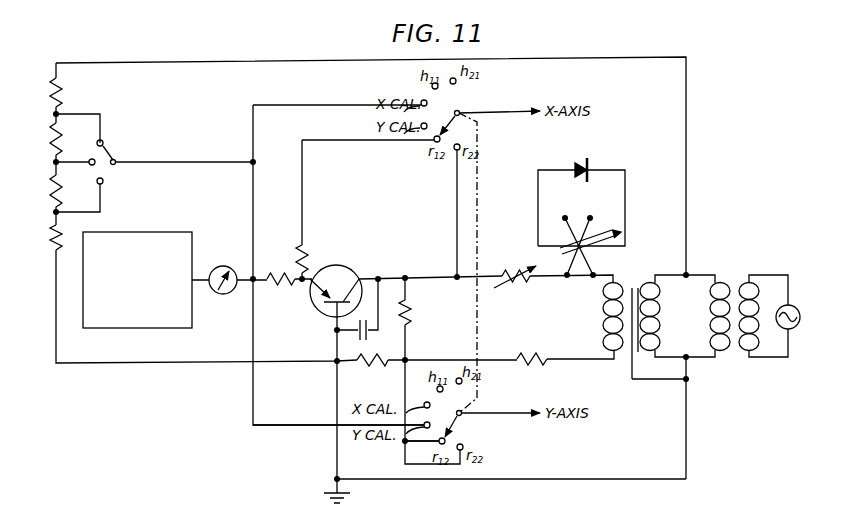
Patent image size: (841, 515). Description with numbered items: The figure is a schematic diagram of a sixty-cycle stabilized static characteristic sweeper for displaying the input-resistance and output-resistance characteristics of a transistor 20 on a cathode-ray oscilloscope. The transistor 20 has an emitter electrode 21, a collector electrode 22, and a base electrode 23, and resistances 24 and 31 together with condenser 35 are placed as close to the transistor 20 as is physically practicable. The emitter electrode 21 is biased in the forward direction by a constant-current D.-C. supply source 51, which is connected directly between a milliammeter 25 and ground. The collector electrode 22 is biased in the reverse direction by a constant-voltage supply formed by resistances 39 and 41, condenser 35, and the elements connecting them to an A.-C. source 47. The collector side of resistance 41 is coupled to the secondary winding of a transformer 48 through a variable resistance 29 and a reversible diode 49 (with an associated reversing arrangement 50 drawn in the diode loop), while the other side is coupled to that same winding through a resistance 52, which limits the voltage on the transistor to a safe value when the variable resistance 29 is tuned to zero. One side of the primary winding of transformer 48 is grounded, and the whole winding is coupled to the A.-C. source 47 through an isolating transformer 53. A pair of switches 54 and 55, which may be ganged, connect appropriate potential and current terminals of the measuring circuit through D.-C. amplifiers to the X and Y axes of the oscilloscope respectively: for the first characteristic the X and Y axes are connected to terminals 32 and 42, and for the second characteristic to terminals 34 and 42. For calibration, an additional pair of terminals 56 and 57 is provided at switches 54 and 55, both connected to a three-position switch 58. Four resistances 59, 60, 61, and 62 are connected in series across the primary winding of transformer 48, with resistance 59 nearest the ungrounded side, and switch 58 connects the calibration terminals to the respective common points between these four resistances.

The transistor 20 is at (336, 266).
The emitter electrode 21 is at (318, 295).
The collector electrode 22 is at (356, 268).
The base electrode 23 is at (328, 308).
The resistance 24 is at (275, 290).
The milliammeter 25 is at (223, 294).
The variable resistance 29 is at (514, 286).
The resistance 31 is at (296, 255).
The terminal 32 is at (380, 141).
The terminal 34 is at (455, 174).
The condenser 35 is at (367, 314).
The resistance 39 is at (368, 368).
The resistance 41 is at (411, 313).
The terminal 42 is at (405, 450).
The A.-C. source 47 is at (798, 326).
The transformer 48 is at (634, 286).
The reversible diode 49 is at (590, 160).
The reversing switch 50 is at (612, 226).
The constant-current D.-C. supply source 51 is at (160, 232).
The resistance 52 is at (530, 367).
The isolating transformer 53 is at (726, 284).
The switch 54 is at (461, 108).
The switch 55 is at (461, 417).
The calibration terminal 56 is at (361, 104).
The calibration terminal 57 is at (310, 428).
The switch 58 is at (117, 158).
The resistance 59 is at (48, 100).
The resistance 60 is at (48, 148).
The resistance 61 is at (48, 198).
The resistance 62 is at (52, 250).